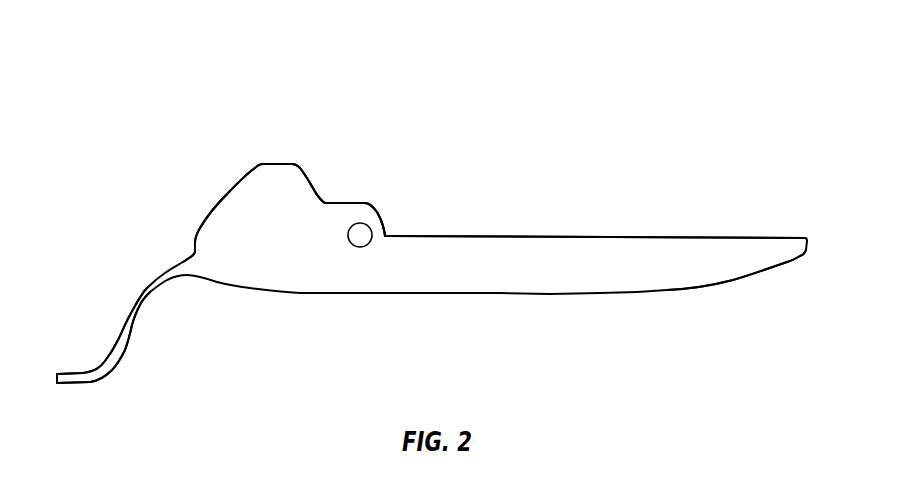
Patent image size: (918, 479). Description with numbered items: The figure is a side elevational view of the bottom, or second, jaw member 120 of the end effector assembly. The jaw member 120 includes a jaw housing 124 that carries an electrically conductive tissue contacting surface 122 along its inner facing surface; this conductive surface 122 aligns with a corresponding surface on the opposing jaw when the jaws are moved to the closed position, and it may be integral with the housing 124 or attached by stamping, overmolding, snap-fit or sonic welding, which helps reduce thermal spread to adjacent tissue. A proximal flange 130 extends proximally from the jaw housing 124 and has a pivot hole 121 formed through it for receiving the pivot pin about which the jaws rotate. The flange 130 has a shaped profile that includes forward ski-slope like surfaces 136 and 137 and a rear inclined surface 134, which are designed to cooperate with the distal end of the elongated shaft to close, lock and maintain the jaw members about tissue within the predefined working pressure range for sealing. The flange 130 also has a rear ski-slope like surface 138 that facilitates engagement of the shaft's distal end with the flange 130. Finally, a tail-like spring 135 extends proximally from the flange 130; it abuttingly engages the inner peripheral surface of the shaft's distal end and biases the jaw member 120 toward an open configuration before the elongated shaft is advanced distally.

The second jaw member 120 is at (567, 296).
The pivot hole 121 is at (361, 235).
The electrically conductive tissue contacting surface 122 is at (665, 237).
The jaw housing 124 is at (737, 260).
The proximal flange 130 is at (287, 162).
The rear inclined surface 134 is at (228, 193).
The tail-like spring 135 is at (118, 353).
The forward ski-slope like surface 136 is at (313, 183).
The forward ski-slope like surface 137 is at (392, 233).
The rear ski-slope like surface 138 is at (194, 243).